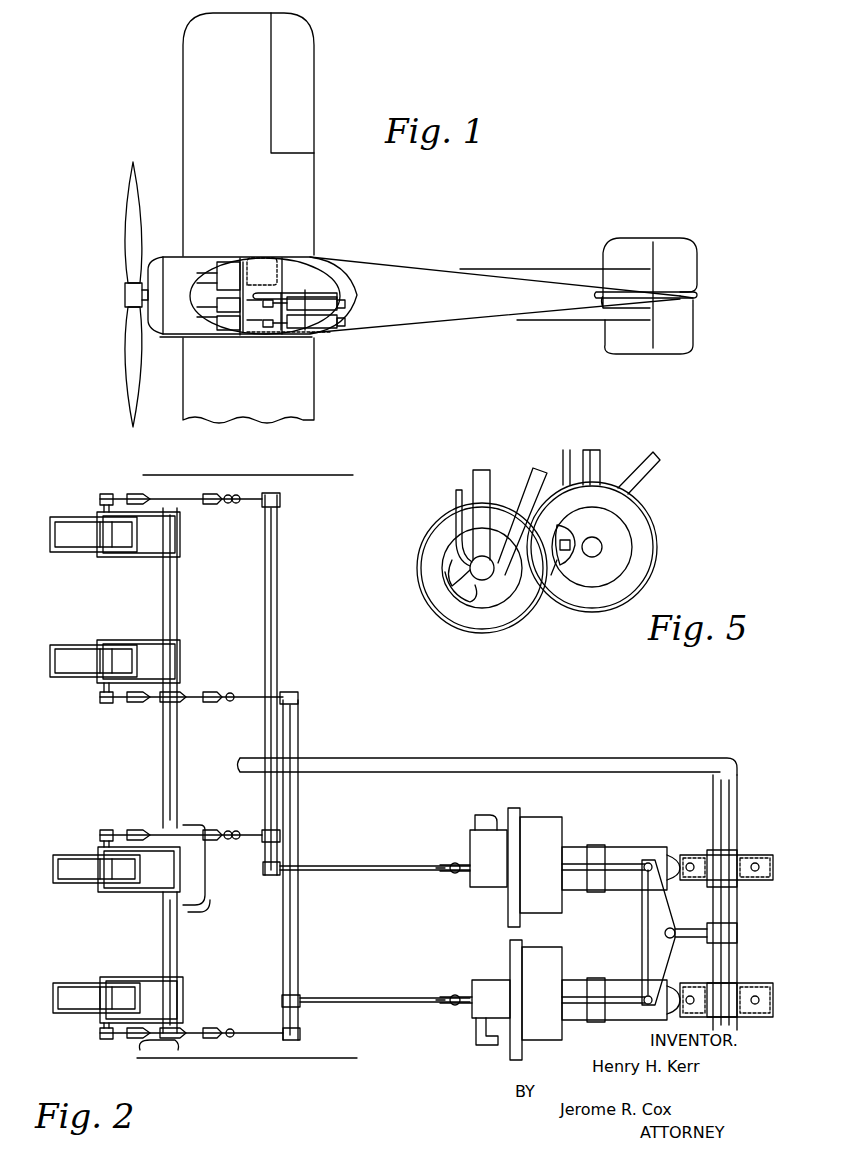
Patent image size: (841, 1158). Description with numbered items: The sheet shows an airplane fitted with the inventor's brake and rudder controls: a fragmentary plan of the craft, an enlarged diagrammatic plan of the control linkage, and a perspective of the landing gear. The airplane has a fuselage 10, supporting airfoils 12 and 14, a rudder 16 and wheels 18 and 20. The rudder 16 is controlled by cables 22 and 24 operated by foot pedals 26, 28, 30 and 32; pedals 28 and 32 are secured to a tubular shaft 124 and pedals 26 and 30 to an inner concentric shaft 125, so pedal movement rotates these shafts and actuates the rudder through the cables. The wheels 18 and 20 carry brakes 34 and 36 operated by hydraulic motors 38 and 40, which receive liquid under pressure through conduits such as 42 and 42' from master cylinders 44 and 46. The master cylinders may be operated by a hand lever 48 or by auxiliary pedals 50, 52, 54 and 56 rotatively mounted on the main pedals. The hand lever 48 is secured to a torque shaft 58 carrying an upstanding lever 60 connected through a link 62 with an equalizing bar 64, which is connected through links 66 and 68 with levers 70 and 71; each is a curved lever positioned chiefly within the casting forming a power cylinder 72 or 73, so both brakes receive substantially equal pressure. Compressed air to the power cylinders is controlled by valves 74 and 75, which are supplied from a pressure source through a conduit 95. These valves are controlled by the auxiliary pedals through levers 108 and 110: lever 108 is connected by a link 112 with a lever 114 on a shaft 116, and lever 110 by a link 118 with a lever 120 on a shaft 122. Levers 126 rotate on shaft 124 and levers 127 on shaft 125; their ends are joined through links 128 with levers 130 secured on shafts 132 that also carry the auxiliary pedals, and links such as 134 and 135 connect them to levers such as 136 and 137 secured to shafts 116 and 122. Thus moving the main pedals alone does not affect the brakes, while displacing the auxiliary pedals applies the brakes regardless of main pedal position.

In FIG. 1, the fuselage 10 is at (407, 282).
In FIG. 1, the supporting airfoil 12 is at (305, 398).
In FIG. 1, the supporting airfoil 14 is at (304, 209).
In FIG. 1, the rudder 16 is at (691, 292).
In FIG. 5, the wheel 18 is at (440, 530).
In FIG. 5, the wheel 20 is at (640, 522).
In FIG. 1, the cable 22 is at (561, 268).
In FIG. 2, the cable 22 is at (322, 478).
In FIG. 1, the cable 24 is at (556, 322).
In FIG. 2, the cable 24 is at (332, 1061).
In FIG. 1, the foot pedal 26 is at (214, 262).
In FIG. 2, the foot pedal 26 is at (125, 557).
In FIG. 1, the foot pedal 28 is at (230, 262).
In FIG. 2, the foot pedal 28 is at (137, 640).
In FIG. 1, the foot pedal 30 is at (212, 310).
In FIG. 2, the foot pedal 30 is at (132, 892).
In FIG. 1, the foot pedal 32 is at (216, 322).
In FIG. 2, the foot pedal 32 is at (124, 978).
In FIG. 5, the brake 34 is at (468, 598).
In FIG. 5, the brake 36 is at (570, 560).
In FIG. 5, the hydraulic motor 38 is at (452, 586).
In FIG. 5, the hydraulic motor 40 is at (556, 567).
In FIG. 5, the conduit 42 is at (497, 517).
In FIG. 5, the landing gear strut 42' is at (610, 457).
In FIG. 1, the master cylinder 44 is at (313, 299).
In FIG. 2, the master cylinder 44 is at (668, 855).
In FIG. 1, the master cylinder 46 is at (320, 330).
In FIG. 2, the master cylinder 46 is at (635, 1020).
In FIG. 1, the hand lever 48 is at (318, 294).
In FIG. 2, the hand lever 48 is at (376, 758).
In FIG. 2, the auxiliary pedal 50 is at (66, 545).
In FIG. 2, the auxiliary pedal 52 is at (58, 676).
In FIG. 2, the auxiliary pedal 54 is at (70, 858).
In FIG. 2, the auxiliary pedal 56 is at (72, 988).
In FIG. 1, the torque shaft 58 is at (343, 324).
In FIG. 2, the torque shaft 58 is at (737, 810).
In FIG. 2, the upstanding lever 60 is at (737, 925).
In FIG. 1, the link 62 is at (341, 300).
In FIG. 2, the link 62 is at (685, 926).
In FIG. 2, the equalizing bar 64 is at (645, 914).
In FIG. 2, the link 66 is at (617, 980).
In FIG. 2, the link 68 is at (635, 847).
In FIG. 2, the lever 70 is at (570, 995).
In FIG. 2, the lever 71 is at (572, 860).
In FIG. 2, the power cylinder 72 is at (552, 947).
In FIG. 2, the power cylinder 73 is at (540, 817).
In FIG. 2, the valve 74 is at (498, 980).
In FIG. 2, the valve 75 is at (497, 830).
In FIG. 2, the conduit 95 is at (480, 1046).
In FIG. 2, the lever 108 is at (465, 995).
In FIG. 2, the lever 110 is at (462, 862).
In FIG. 2, the link 112 is at (375, 997).
In FIG. 2, the lever 114 is at (298, 995).
In FIG. 2, the shaft 116 is at (298, 935).
In FIG. 2, the link 118 is at (385, 864).
In FIG. 2, the lever 120 is at (264, 875).
In FIG. 2, the shaft 122 is at (282, 603).
In FIG. 2, the tubular shaft 124 is at (178, 980).
In FIG. 2, the inner concentric shaft 125 is at (178, 596).
In FIG. 2, the lever 126 is at (185, 703).
In FIG. 2, the lever 127 is at (190, 500).
In FIG. 2, the link 128 is at (196, 497).
In FIG. 2, the lever 130 is at (130, 493).
In FIG. 2, the shaft 132 is at (100, 506).
In FIG. 2, the link 134 is at (245, 695).
In FIG. 2, the link 135 is at (233, 504).
In FIG. 2, the lever 136 is at (288, 692).
In FIG. 2, the lever 137 is at (270, 493).